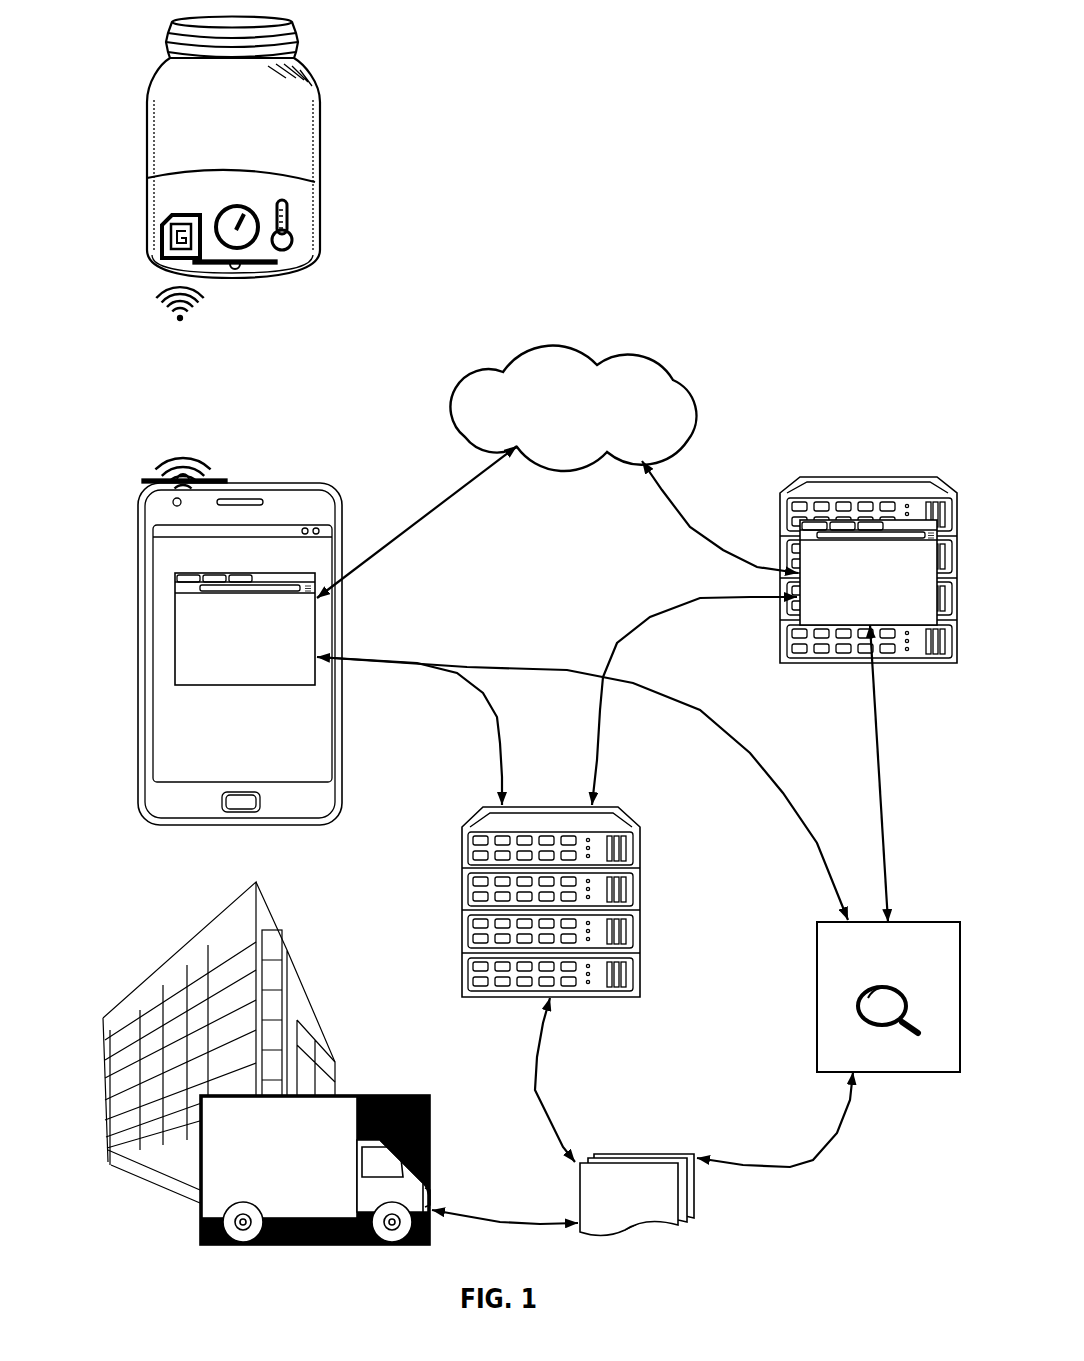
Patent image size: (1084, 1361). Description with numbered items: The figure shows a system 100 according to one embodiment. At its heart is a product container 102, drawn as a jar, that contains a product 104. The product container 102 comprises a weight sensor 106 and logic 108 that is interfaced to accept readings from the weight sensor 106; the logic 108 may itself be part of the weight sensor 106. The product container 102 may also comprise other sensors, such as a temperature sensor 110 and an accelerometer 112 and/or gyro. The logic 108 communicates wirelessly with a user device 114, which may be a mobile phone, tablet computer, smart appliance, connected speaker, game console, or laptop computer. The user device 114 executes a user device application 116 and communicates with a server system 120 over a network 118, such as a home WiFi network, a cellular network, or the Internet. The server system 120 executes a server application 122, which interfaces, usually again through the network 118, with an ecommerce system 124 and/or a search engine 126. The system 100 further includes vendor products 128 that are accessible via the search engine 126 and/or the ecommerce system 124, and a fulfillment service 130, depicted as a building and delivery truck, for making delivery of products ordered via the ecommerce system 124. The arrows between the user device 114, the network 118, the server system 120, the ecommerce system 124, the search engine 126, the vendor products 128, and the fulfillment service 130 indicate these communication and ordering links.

The system 100 is at (800, 65).
The product container 102 is at (323, 162).
The product 104 is at (153, 175).
The weight sensor 106 is at (293, 263).
The logic 108 is at (153, 250).
The temperature sensor 110 is at (293, 240).
The accelerometer 112 is at (220, 217).
The user device 114 is at (327, 490).
The user device application 116 is at (317, 630).
The network 118 is at (658, 421).
The server system 120 is at (870, 477).
The server application 122 is at (800, 545).
The ecommerce system 124 is at (593, 997).
The search engine 126 is at (905, 960).
The vendor products 128 is at (648, 1208).
The fulfillment service 130 is at (200, 1208).